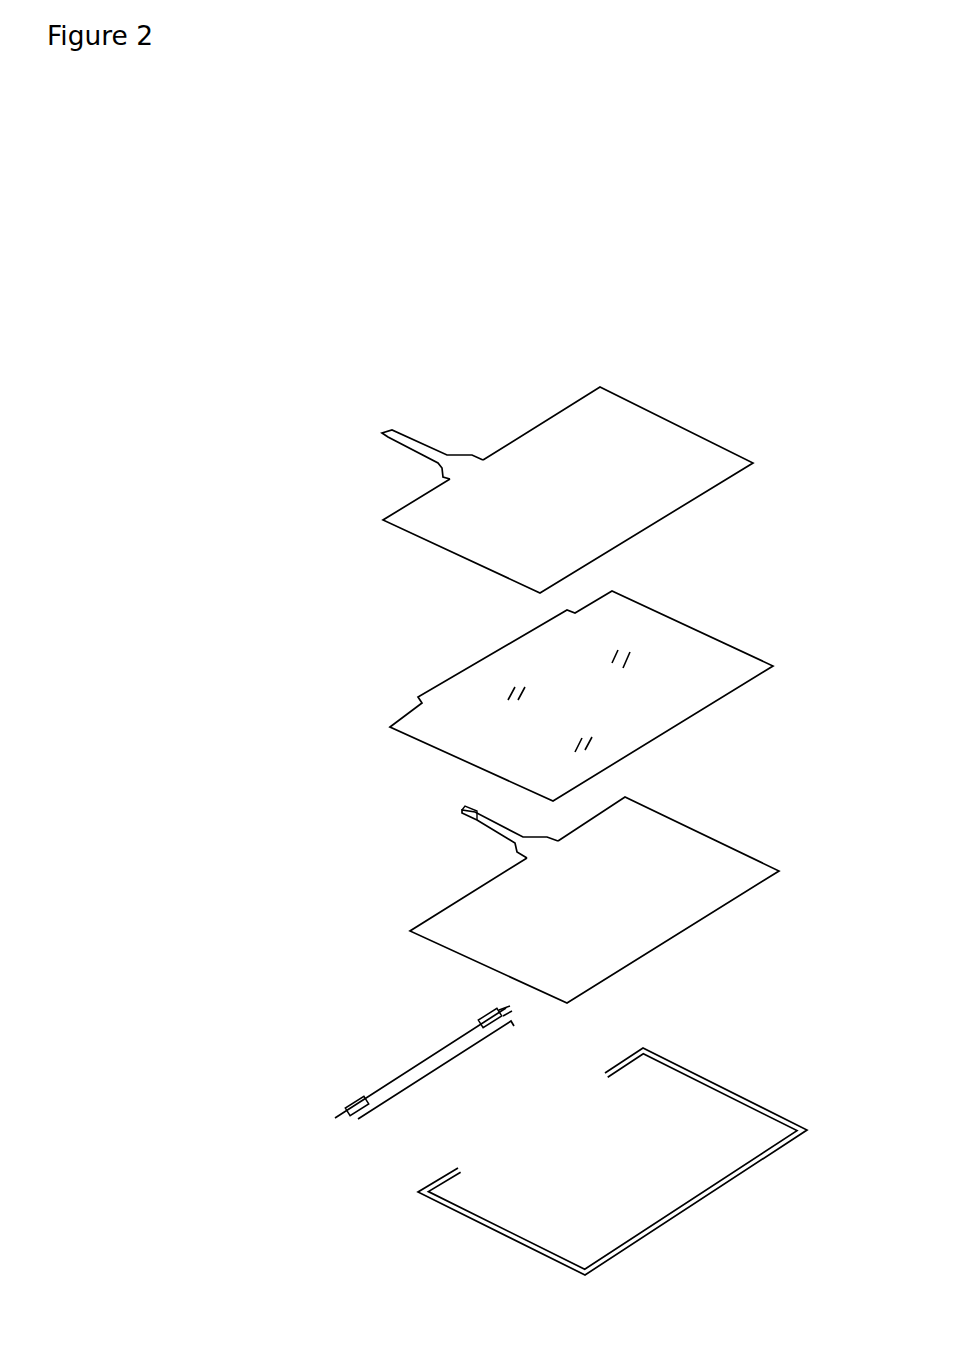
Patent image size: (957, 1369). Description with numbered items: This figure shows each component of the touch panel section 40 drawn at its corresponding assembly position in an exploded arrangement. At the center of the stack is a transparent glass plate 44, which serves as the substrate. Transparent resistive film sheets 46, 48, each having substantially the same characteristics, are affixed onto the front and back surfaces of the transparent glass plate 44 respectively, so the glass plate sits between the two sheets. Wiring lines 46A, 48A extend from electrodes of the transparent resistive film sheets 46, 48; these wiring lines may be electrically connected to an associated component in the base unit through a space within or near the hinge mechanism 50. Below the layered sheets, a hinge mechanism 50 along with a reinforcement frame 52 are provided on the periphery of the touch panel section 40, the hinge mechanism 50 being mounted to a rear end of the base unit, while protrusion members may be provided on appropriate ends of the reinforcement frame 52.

The touch panel section 40 is at (205, 625).
The transparent glass plate 44 is at (388, 727).
The transparent resistive film sheet 46 is at (383, 520).
The wiring line 46A is at (393, 428).
The transparent resistive film sheet 48 is at (410, 932).
The wiring line 48A is at (460, 812).
The hinge mechanism 50 is at (328, 1113).
The reinforcement frame 52 is at (452, 1213).